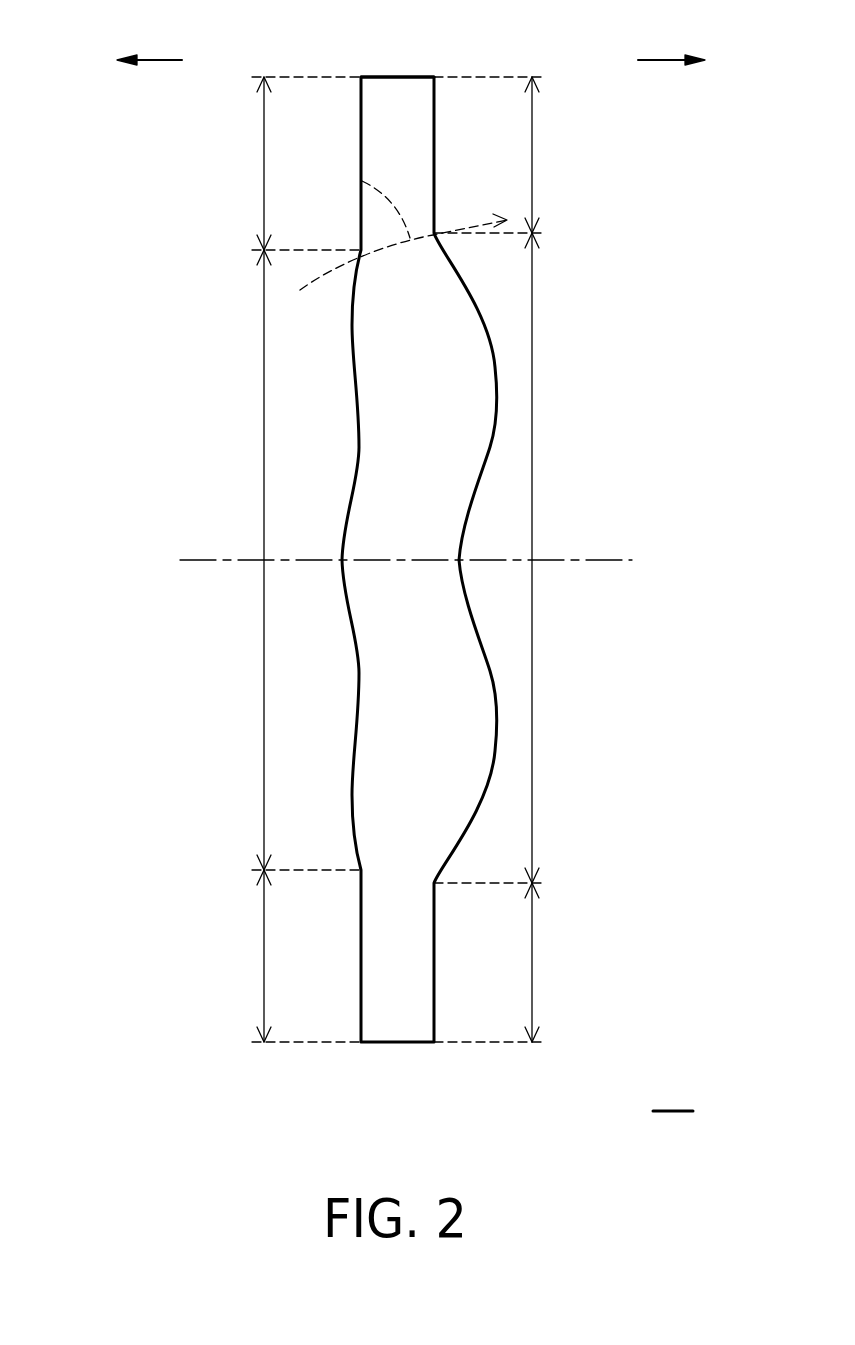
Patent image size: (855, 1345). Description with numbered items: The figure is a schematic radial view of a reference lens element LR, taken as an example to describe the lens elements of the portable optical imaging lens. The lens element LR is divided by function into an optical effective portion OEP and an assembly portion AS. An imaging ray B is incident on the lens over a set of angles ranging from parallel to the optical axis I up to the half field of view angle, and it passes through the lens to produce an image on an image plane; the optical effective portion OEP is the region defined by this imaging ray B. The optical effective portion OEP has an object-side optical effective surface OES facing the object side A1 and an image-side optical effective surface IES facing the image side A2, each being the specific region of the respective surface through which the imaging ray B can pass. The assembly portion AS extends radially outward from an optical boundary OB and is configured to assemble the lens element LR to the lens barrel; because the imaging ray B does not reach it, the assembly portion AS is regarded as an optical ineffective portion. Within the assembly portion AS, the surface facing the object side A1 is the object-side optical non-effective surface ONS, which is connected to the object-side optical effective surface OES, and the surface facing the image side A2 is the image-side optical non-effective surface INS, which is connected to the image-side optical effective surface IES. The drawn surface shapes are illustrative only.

The optical effective portion OEP is at (432, 387).
The object-side optical non-effective surface ONS is at (281, 559).
The object-side optical effective surface OES is at (233, 560).
The image-side optical non-effective surface INS is at (513, 559).
The image-side optical effective surface IES is at (562, 558).
The optical axis I is at (595, 560).
The assembly portion AS is at (400, 97).
The imaging ray B is at (476, 223).
The optical boundary OB is at (362, 181).
The object side A1 is at (149, 38).
The image side A2 is at (671, 38).
The reference lens element LR is at (673, 1088).